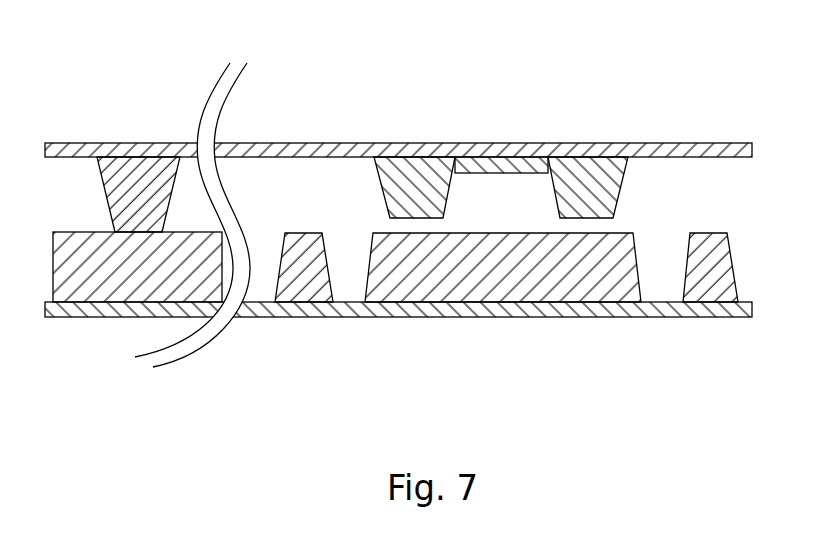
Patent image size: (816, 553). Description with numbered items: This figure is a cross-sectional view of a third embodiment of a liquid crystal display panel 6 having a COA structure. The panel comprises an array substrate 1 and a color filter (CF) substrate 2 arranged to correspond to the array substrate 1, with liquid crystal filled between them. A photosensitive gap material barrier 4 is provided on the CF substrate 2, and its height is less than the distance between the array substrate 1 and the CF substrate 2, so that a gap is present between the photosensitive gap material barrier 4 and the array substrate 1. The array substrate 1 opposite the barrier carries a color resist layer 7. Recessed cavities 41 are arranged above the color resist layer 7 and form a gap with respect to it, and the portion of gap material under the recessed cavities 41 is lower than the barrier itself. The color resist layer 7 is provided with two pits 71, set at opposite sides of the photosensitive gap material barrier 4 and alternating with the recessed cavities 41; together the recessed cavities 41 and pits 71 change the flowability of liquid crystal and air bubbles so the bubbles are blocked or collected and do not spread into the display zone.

The array substrate 1 is at (98, 308).
The color filter (CF) substrate 2 is at (695, 150).
The photosensitive gap material barrier 4 is at (408, 192).
The recessed cavities 41 is at (494, 197).
The display panel 6 is at (48, 127).
The color resist layer 7 is at (598, 278).
The pits 71 is at (350, 272).